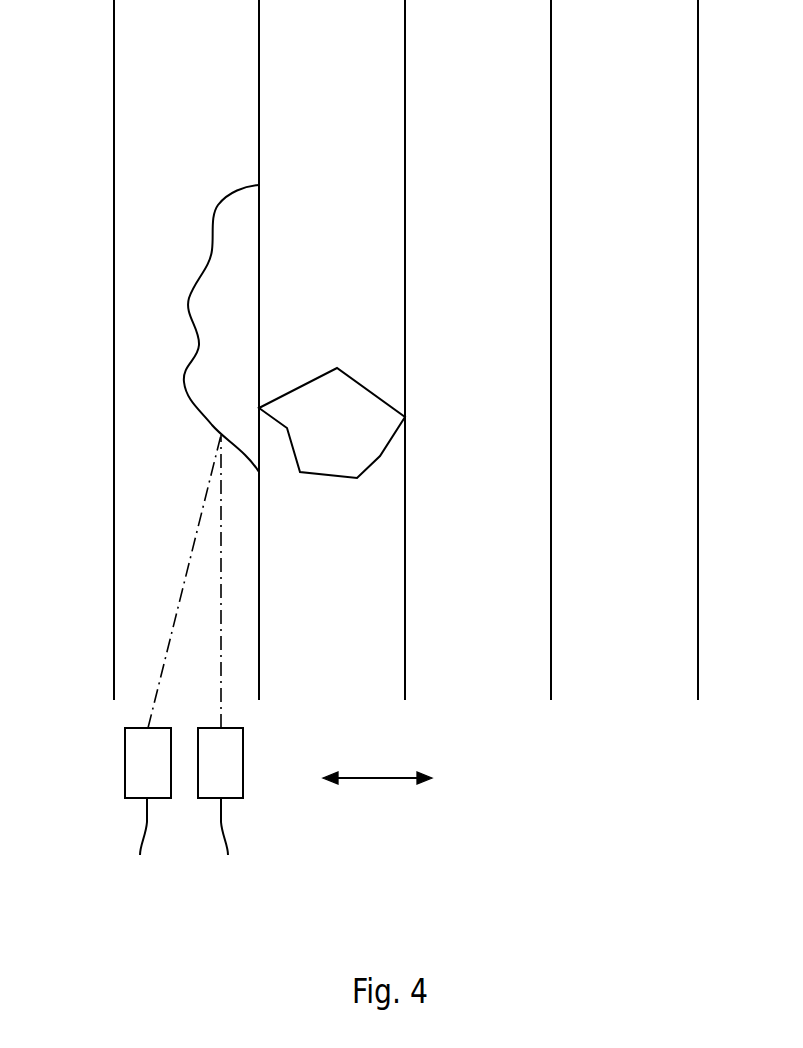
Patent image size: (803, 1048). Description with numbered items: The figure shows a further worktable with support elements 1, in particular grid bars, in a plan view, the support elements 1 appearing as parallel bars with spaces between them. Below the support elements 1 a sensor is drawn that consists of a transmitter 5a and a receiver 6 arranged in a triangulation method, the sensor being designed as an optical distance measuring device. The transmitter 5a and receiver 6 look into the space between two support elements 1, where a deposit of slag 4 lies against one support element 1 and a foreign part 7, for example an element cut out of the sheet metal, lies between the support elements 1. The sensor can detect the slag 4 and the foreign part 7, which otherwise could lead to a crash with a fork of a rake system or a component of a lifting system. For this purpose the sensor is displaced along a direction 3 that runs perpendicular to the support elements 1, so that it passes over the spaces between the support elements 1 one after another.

The support elements 1 is at (114, 375).
The direction of displacement of sensor 3 is at (374, 779).
The slag 4 is at (238, 342).
The transmitter 5a is at (125, 760).
The receiver 6 is at (243, 760).
The foreign part 7 is at (347, 436).